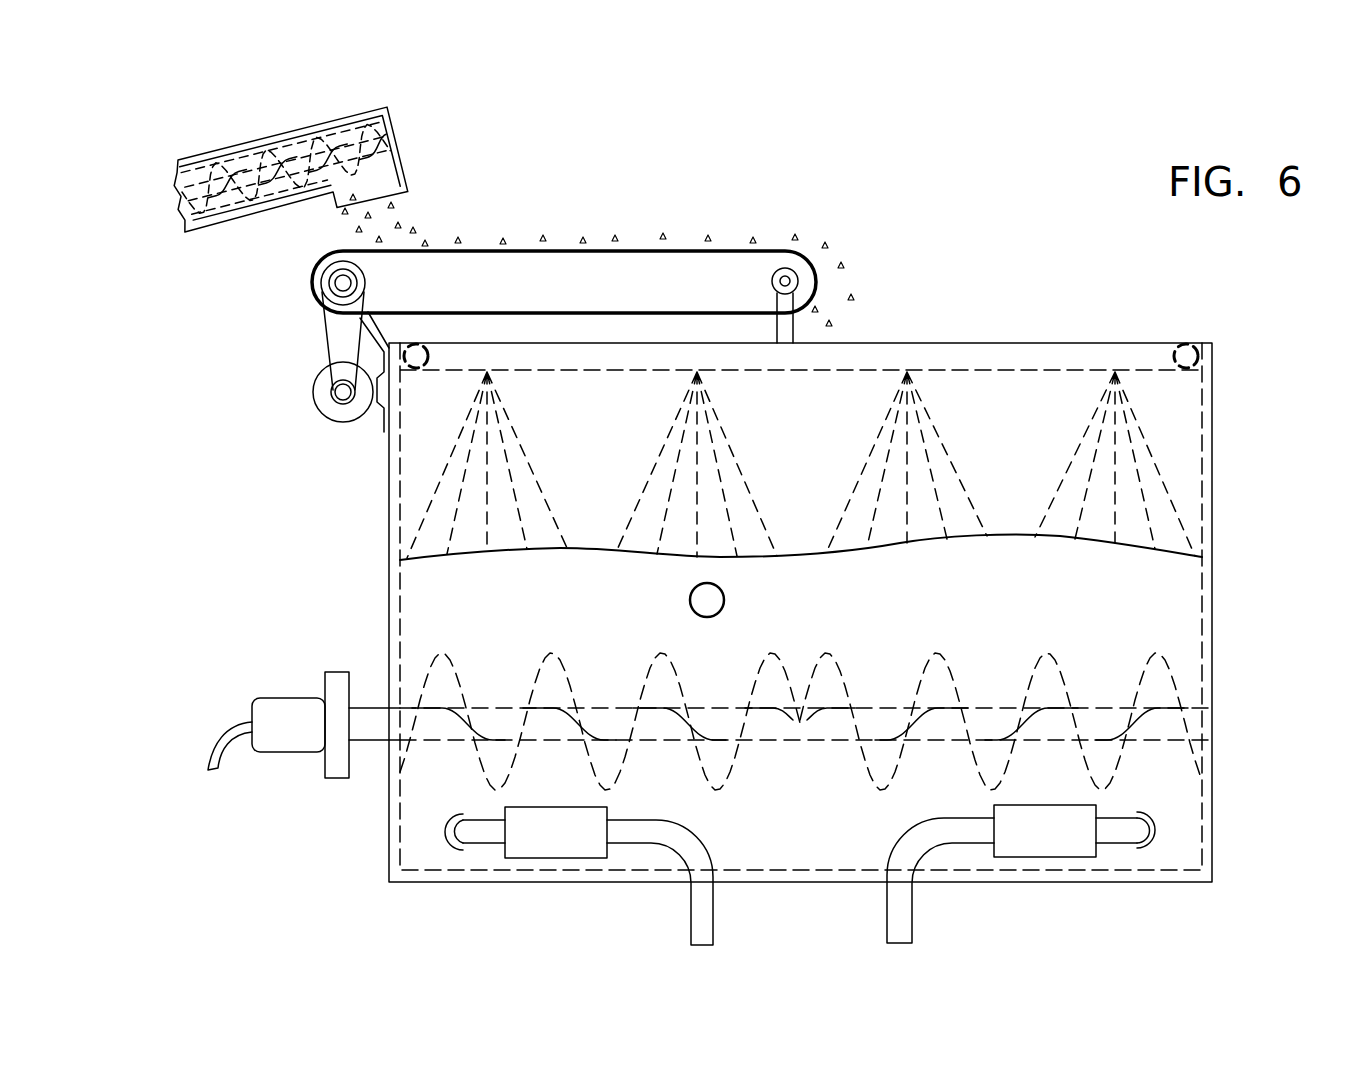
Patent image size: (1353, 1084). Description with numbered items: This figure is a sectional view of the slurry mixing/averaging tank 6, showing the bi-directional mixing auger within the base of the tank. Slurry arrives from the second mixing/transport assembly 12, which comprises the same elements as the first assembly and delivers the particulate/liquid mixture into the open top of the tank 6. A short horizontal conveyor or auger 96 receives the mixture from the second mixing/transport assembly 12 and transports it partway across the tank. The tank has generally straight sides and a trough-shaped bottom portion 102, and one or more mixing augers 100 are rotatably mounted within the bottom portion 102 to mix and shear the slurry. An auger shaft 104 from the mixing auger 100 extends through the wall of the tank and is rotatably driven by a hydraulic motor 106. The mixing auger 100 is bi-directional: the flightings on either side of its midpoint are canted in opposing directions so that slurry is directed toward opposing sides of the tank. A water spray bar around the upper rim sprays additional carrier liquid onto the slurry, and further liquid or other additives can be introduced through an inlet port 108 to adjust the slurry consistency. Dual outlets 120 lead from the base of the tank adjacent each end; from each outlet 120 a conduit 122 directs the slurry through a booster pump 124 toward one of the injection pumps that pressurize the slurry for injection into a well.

The second mixing/transport assembly 12 is at (258, 122).
The short horizontal conveyor or auger 96 is at (652, 237).
The slurry mixing/averaging tank 6 is at (1232, 628).
The mixing auger 100 is at (827, 725).
The trough-shaped bottom portion 102 is at (1190, 808).
The auger shaft 104 is at (1187, 706).
The hydraulic motor 106 is at (292, 738).
The inlet port 108 is at (690, 600).
The outlet 120 is at (448, 847).
The conduit 122 is at (488, 837).
The booster pump 124 is at (587, 845).